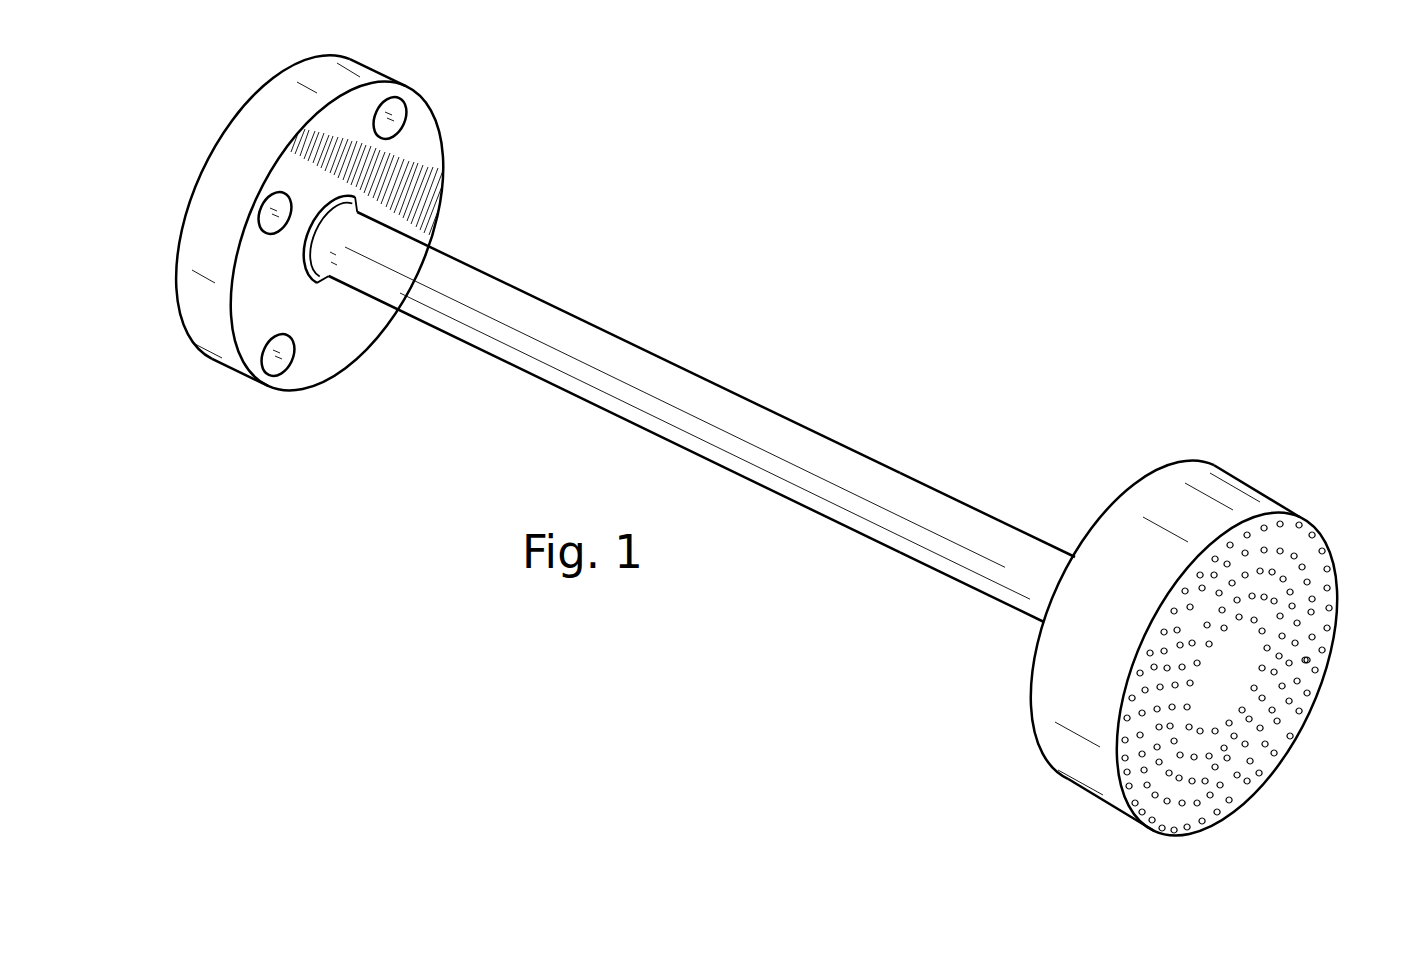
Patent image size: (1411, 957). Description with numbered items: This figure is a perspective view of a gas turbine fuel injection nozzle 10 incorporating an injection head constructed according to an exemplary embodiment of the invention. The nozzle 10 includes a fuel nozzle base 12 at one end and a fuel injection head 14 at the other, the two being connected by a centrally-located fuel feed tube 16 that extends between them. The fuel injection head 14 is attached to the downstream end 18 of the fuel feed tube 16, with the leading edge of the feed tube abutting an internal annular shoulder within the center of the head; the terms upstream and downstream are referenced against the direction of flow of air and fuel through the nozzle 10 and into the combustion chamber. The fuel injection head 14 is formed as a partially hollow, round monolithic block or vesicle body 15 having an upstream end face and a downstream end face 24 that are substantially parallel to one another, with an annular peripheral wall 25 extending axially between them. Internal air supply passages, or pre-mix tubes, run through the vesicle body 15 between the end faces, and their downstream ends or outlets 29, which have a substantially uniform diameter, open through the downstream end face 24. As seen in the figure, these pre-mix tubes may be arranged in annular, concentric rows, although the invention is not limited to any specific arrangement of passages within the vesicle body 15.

The gas turbine fuel injection nozzle 10 is at (892, 308).
The fuel nozzle base 12 is at (197, 235).
The fuel injection head 14 is at (1130, 448).
The vesicle body 15 is at (1068, 668).
The fuel feed tube 16 is at (712, 408).
The downstream end 18 is at (1015, 575).
The downstream end face 24 is at (1322, 558).
The annular peripheral wall 25 is at (1222, 492).
The outlets 29 is at (1270, 740).